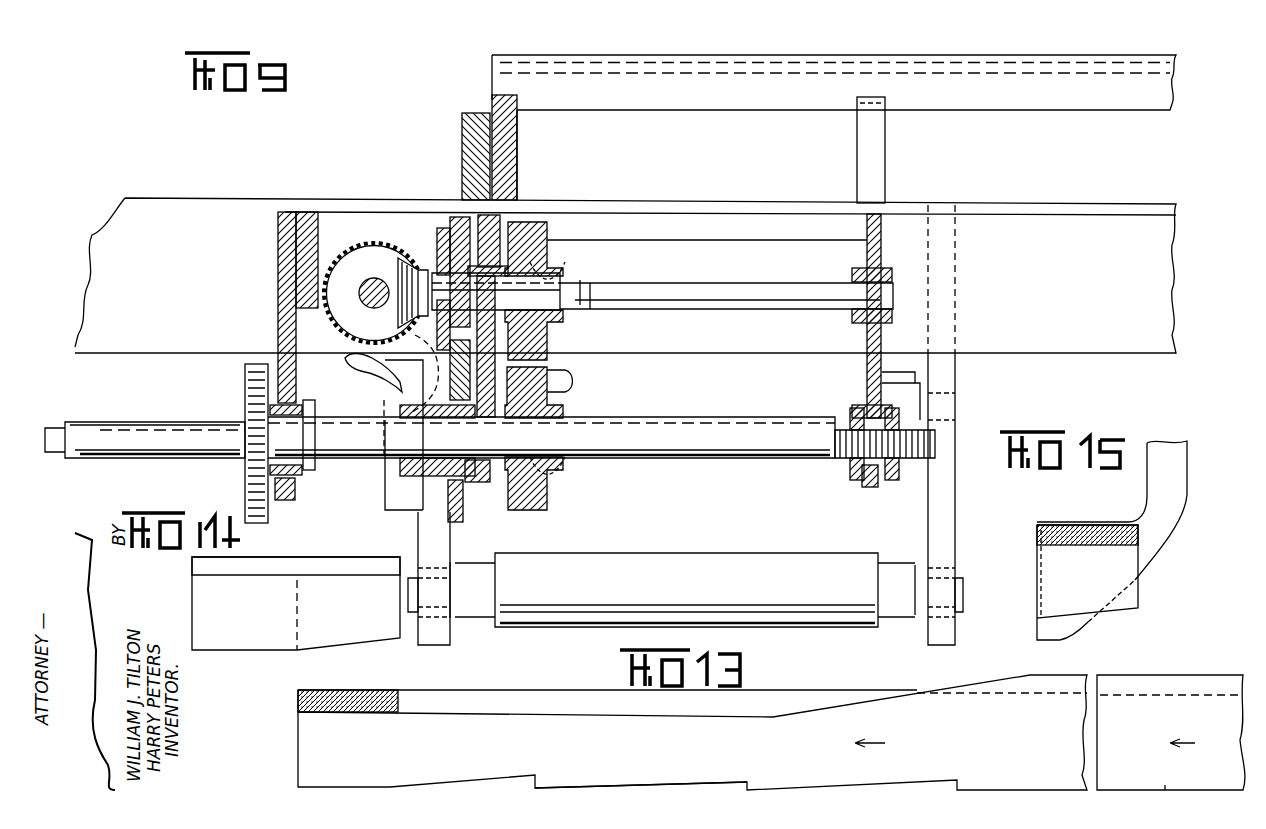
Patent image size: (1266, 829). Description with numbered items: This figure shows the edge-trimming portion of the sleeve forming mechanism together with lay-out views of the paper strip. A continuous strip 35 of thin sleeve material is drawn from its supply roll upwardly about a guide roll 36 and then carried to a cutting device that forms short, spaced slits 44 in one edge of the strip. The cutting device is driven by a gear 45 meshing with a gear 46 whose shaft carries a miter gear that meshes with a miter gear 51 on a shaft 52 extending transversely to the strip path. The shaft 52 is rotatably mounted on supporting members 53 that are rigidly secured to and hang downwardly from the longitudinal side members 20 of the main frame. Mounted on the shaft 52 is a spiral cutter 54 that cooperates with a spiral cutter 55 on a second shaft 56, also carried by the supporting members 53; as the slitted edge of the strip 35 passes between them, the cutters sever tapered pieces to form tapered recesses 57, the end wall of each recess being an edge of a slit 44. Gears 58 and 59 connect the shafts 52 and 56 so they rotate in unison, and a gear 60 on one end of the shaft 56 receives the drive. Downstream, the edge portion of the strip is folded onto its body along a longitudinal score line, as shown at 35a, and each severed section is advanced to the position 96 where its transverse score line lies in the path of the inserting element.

In FIG. 9, the longitudinal side members 20 is at (750, 205).
In FIG. 9, the supporting members 53 is at (500, 218).
In FIG. 9, the gear 58 is at (455, 217).
In FIG. 9, the gear 46 is at (372, 255).
In FIG. 9, the miter gear 51 is at (395, 325).
In FIG. 9, the gear 45 is at (385, 390).
In FIG. 9, the spiral cutter 54 is at (550, 250).
In FIG. 9, the spiral cutter 55 is at (550, 398).
In FIG. 9, the shaft 52 is at (708, 268).
In FIG. 9, the shaft 56 is at (655, 460).
In FIG. 9, the gear 59 is at (465, 515).
In FIG. 9, the gear 60 is at (252, 523).
In FIG. 9, the guide roll 36 is at (610, 562).
In FIG. 14, the strip 35 is at (255, 638).
In FIG. 15, the strip 35 is at (1050, 588).
In FIG. 13, the strip 35 is at (912, 710).
In FIG. 14, the folded edge portion 35a is at (332, 567).
In FIG. 15, the folded edge portion 35a is at (1037, 535).
In FIG. 13, the folded edge portion 35a is at (780, 706).
In FIG. 15, the position of severed section 96 is at (1078, 632).
In FIG. 13, the slit 44 is at (750, 786).
In FIG. 13, the tapered recess 57 is at (722, 792).